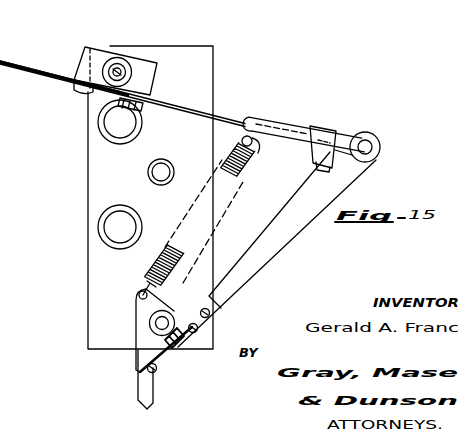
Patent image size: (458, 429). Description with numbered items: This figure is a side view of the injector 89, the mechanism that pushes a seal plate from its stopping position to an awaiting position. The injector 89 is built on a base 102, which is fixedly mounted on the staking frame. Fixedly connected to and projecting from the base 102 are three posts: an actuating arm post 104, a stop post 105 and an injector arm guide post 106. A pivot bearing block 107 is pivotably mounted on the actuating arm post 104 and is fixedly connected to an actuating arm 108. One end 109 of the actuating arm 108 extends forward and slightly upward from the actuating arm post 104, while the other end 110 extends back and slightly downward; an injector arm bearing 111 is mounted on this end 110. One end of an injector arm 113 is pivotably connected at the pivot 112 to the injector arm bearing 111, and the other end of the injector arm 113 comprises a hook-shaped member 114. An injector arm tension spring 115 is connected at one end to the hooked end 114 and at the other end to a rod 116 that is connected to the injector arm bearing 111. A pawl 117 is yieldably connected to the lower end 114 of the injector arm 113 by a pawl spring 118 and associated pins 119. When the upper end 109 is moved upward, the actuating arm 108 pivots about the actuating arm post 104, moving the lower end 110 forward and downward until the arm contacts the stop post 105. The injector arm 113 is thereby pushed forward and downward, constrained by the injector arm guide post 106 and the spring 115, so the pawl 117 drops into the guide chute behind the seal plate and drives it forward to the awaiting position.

The injector 89 is at (73, 121).
The base 102 is at (98, 177).
The actuating arm post 104 is at (130, 69).
The stop post 105 is at (161, 159).
The injector arm guide post 106 is at (160, 308).
The pivot bearing block 107 is at (98, 57).
The actuating arm 108 is at (47, 75).
The end of the actuating arm 109 is at (22, 66).
The end of the actuating arm 110 is at (337, 150).
The injector arm bearing 111 is at (314, 127).
The pivot 112 is at (387, 125).
The injector arm 113 is at (297, 227).
The hook-shaped member 114 is at (135, 302).
The injector arm tension spring 115 is at (239, 172).
The rod 116 is at (252, 118).
The pawl 117 is at (148, 380).
The pawl spring 118 is at (176, 342).
The pins 119 is at (210, 325).